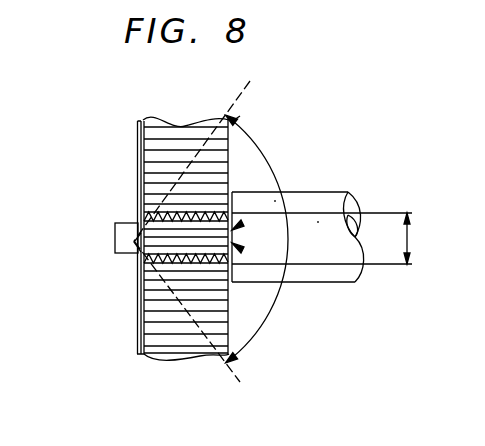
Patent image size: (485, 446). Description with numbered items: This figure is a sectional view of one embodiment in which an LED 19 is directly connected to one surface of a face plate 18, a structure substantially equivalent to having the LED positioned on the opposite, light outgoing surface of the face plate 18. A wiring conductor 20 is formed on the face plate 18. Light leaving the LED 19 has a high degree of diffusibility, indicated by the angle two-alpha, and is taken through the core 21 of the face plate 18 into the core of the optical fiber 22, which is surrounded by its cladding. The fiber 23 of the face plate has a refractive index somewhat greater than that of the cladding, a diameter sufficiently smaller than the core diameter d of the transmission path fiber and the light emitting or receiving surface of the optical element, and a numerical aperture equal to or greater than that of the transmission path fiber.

The face plate 18 is at (148, 357).
The LED 19 is at (118, 238).
The wiring conductor 20 is at (138, 155).
The core of the face plate 21 is at (140, 253).
The optical fiber 22 is at (360, 198).
The fiber 23 is at (220, 265).